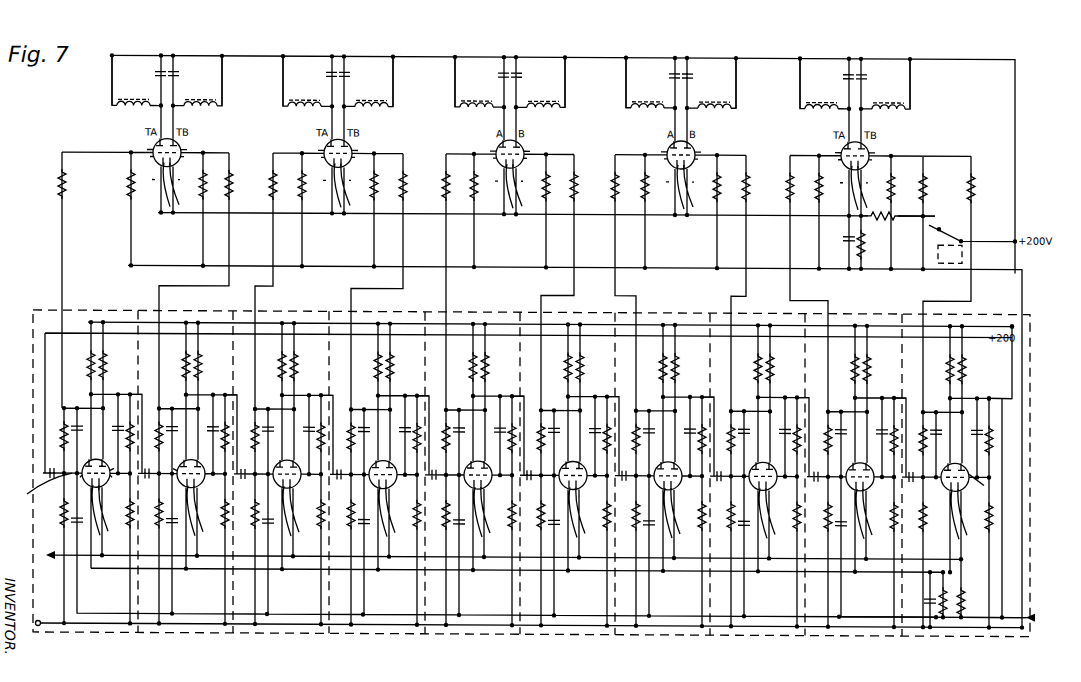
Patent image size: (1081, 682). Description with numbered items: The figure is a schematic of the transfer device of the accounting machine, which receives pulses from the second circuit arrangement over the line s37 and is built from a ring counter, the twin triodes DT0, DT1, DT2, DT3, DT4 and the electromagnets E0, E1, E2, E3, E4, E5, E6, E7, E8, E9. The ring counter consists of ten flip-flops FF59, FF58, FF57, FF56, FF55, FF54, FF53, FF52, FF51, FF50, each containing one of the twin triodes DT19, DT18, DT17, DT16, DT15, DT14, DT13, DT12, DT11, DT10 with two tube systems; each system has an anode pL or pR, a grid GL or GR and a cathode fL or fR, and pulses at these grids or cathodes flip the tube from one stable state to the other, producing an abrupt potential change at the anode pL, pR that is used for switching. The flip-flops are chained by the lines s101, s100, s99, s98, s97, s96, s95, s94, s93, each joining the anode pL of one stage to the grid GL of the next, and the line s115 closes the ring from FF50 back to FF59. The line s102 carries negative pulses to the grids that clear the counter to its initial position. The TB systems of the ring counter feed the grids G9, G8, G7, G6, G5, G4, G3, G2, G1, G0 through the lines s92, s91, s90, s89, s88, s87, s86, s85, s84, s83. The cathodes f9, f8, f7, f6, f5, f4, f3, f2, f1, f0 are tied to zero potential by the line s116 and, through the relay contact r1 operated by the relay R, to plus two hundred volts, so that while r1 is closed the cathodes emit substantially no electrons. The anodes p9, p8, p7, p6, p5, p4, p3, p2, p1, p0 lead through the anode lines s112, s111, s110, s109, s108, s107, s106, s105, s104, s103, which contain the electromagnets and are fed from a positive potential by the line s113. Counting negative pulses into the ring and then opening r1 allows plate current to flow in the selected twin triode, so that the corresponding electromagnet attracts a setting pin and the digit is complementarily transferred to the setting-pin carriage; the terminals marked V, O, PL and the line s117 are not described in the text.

The line s113 is at (564, 155).
The line s116 is at (575, 439).
The relay contact r1 is at (972, 230).
The relay R is at (950, 259).
The line s92 is at (52, 280).
The line s91 is at (196, 281).
The line s90 is at (275, 281).
The line s89 is at (379, 281).
The line s88 is at (454, 282).
The line s87 is at (559, 282).
The line s86 is at (624, 283).
The line s85 is at (736, 283).
The line s84 is at (807, 283).
The line s83 is at (949, 284).
The anode line s112 is at (118, 94).
The anode line s111 is at (216, 95).
The anode line s110 is at (285, 95).
The anode line s109 is at (389, 96).
The anode line s108 is at (457, 96).
The anode line s107 is at (561, 96).
The anode line s106 is at (628, 97).
The anode line s105 is at (732, 97).
The anode line s104 is at (802, 98).
The anode line s103 is at (906, 98).
The electromagnet E9 is at (133, 111).
The electromagnet E8 is at (200, 112).
The electromagnet E7 is at (304, 112).
The electromagnet E6 is at (371, 112).
The electromagnet E5 is at (476, 113).
The electromagnet E4 is at (543, 113).
The electromagnet E3 is at (647, 114).
The electromagnet E2 is at (714, 114).
The electromagnet E1 is at (821, 115).
The electromagnet E0 is at (888, 115).
The twin triode DT4 is at (172, 173).
The twin triode DT3 is at (343, 173).
The twin triode DT2 is at (515, 174).
The twin triode DT1 is at (686, 175).
The twin triode DT0 is at (860, 176).
The anode p9 is at (143, 143).
The anode p8 is at (190, 144).
The anode p7 is at (314, 144).
The anode p6 is at (361, 144).
The anode p5 is at (486, 145).
The anode p4 is at (533, 145).
The anode p3 is at (657, 146).
The anode p2 is at (704, 146).
The anode p1 is at (831, 147).
The anode p0 is at (878, 147).
The grid G9 is at (143, 157).
The grid G8 is at (188, 158).
The grid G7 is at (314, 158).
The grid G6 is at (359, 158).
The grid G5 is at (486, 159).
The grid G4 is at (531, 159).
The grid G3 is at (657, 160).
The grid G2 is at (702, 160).
The grid G1 is at (831, 161).
The grid G0 is at (876, 161).
The cathode f9 is at (147, 178).
The cathode f8 is at (183, 179).
The cathode f7 is at (318, 179).
The cathode f6 is at (354, 179).
The cathode f5 is at (490, 180).
The cathode f4 is at (526, 180).
The cathode f3 is at (661, 181).
The cathode f2 is at (697, 181).
The cathode f1 is at (835, 182).
The cathode f0 is at (871, 182).
The voltage terminal V is at (538, 580).
The line s37 is at (489, 569).
The zero terminal O is at (530, 619).
The wire s117 is at (1028, 508).
The line s102 is at (947, 630).
The line s115 is at (1003, 363).
The pulse input PL is at (40, 487).
The flip-flop FF59 is at (108, 458).
The flip-flop FF58 is at (203, 488).
The flip-flop FF57 is at (299, 460).
The flip-flop FF56 is at (395, 490).
The flip-flop FF55 is at (490, 475).
The flip-flop FF54 is at (585, 491).
The flip-flop FF53 is at (680, 491).
The flip-flop FF52 is at (775, 492).
The flip-flop FF51 is at (872, 494).
The flip-flop FF50 is at (958, 495).
The twin triode DT19 is at (106, 502).
The twin triode DT18 is at (201, 503).
The twin triode DT17 is at (297, 503).
The twin triode DT16 is at (393, 504).
The twin triode DT15 is at (488, 504).
The twin triode DT14 is at (583, 504).
The twin triode DT13 is at (678, 505).
The twin triode DT12 is at (773, 505).
The twin triode DT11 is at (870, 506).
The twin triode DT10 is at (965, 506).
The anode pR is at (118, 477).
The anode pL is at (168, 479).
The grid GL is at (81, 487).
The grid GR is at (111, 492).
The cathode fL is at (83, 514).
The cathode fR is at (106, 506).
The line s101 is at (145, 388).
The line s100 is at (240, 389).
The line s99 is at (333, 389).
The line s98 is at (429, 390).
The line s97 is at (524, 390).
The line s96 is at (619, 391).
The line s95 is at (714, 391).
The line s94 is at (809, 392).
The line s93 is at (906, 392).